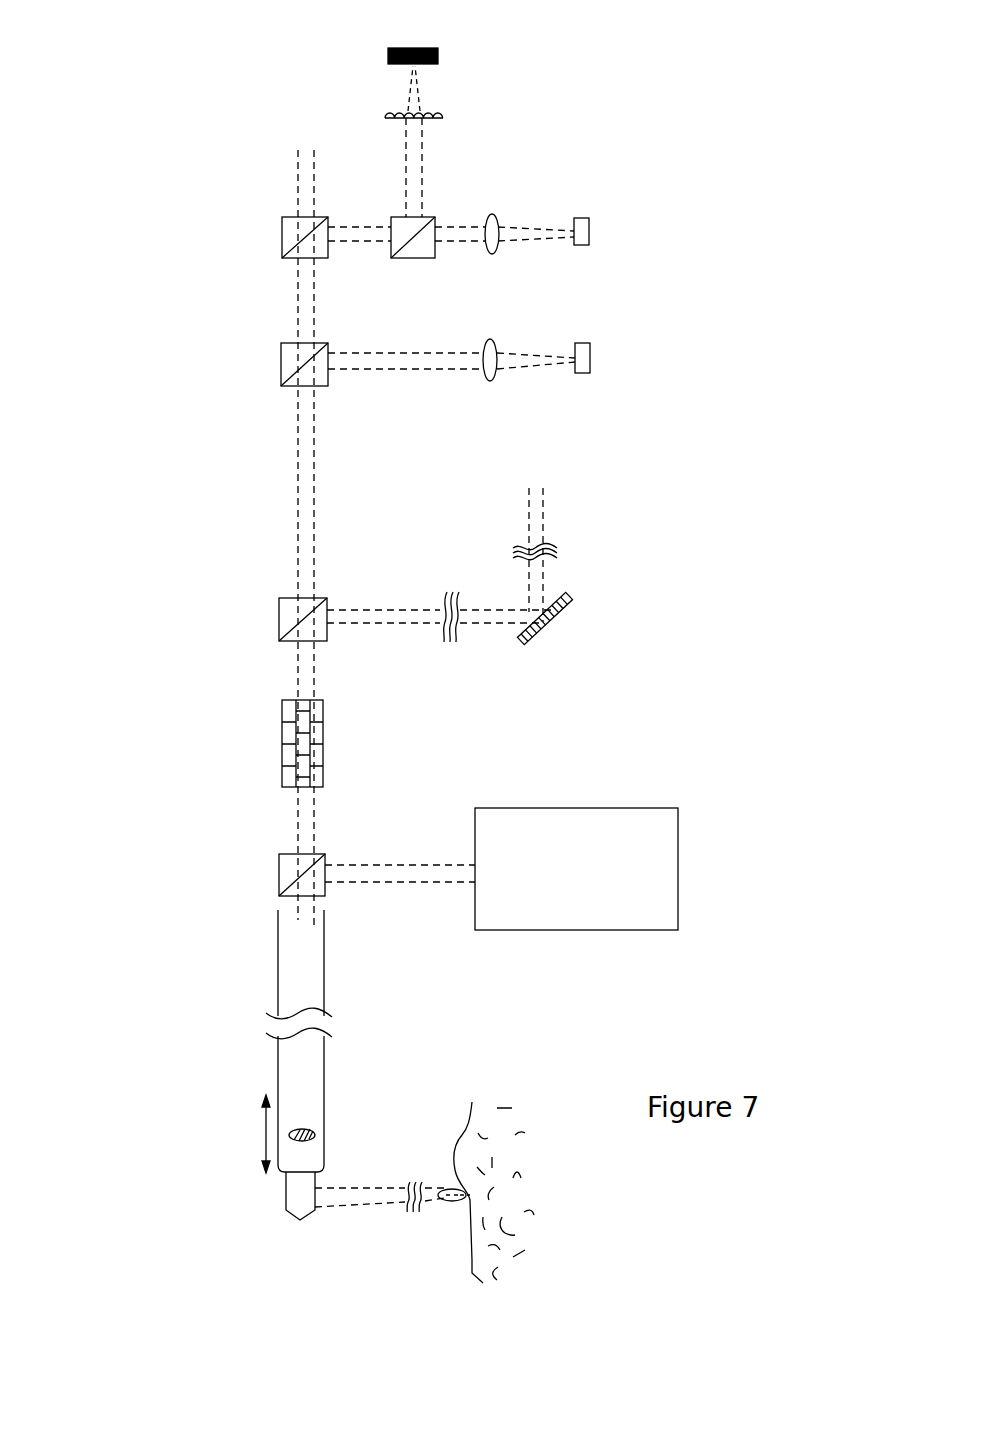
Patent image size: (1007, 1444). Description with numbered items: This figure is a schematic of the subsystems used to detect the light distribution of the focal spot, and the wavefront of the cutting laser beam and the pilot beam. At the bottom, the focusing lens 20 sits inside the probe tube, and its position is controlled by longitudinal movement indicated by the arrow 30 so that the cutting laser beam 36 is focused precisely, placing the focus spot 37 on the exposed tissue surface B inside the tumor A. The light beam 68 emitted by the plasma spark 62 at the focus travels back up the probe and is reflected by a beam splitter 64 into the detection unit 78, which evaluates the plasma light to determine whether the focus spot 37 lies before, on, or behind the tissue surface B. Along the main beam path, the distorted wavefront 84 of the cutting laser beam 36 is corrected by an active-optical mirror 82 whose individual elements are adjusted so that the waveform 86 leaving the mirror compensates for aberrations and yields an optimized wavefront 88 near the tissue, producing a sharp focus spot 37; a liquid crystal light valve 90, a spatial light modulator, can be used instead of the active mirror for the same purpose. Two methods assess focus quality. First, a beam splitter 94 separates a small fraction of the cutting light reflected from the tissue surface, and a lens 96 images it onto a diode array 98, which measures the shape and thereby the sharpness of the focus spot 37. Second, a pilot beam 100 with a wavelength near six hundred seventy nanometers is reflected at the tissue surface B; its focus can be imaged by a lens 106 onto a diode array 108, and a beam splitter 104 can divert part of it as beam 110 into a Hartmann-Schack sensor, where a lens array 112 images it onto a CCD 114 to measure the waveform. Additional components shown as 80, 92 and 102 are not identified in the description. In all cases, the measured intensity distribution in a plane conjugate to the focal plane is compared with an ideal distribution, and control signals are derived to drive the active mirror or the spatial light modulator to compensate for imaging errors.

The focusing lens 20 is at (300, 1130).
The arrow 30 is at (263, 1137).
The cutting laser beam 36 is at (367, 1205).
The focus spot 37 is at (485, 1197).
The plasma spark 62 is at (447, 1208).
The beam splitter 64 is at (278, 873).
The light beam 68 is at (295, 918).
The detection unit 78 is at (576, 869).
The beam splitter 80 is at (278, 613).
The active-optical mirror 82 is at (553, 625).
The distorted wavefront 84 is at (558, 555).
The waveform after the active-optical mirror 86 is at (440, 645).
The optimized wavefront 88 is at (420, 1175).
The liquid crystal light valve 90 is at (327, 722).
The light beam 92 is at (535, 480).
The beam splitter 94 is at (280, 362).
The lens 96 is at (485, 377).
The diode array 98 is at (593, 362).
The pilot beam 100 is at (302, 148).
The beam splitter 102 is at (274, 245).
The beam splitter 104 is at (413, 260).
The lens 106 is at (498, 252).
The diode array 108 is at (592, 232).
The beam 110 is at (428, 172).
The lens array 112 is at (447, 116).
The CCD 114 is at (385, 55).
The tumor A is at (490, 1130).
The tissue surface B is at (465, 1263).